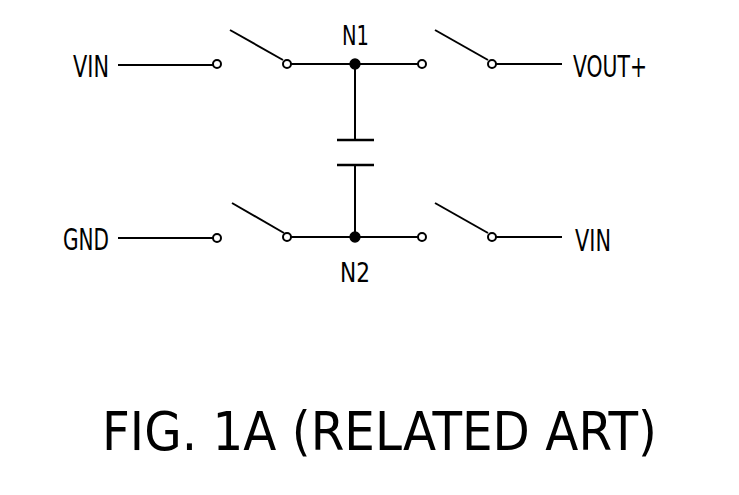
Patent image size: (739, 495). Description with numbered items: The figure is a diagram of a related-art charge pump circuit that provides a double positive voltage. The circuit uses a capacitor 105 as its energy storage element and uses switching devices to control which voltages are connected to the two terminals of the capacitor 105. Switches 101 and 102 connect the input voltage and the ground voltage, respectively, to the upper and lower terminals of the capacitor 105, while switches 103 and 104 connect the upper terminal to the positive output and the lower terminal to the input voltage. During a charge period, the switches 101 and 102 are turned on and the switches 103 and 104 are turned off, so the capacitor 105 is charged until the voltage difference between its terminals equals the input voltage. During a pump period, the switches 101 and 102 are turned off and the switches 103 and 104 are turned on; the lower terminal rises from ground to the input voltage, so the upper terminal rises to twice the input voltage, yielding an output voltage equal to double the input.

The switch 101 is at (245, 72).
The switch 102 is at (245, 245).
The switch 103 is at (462, 80).
The switch 104 is at (452, 248).
The capacitor 105 is at (375, 153).